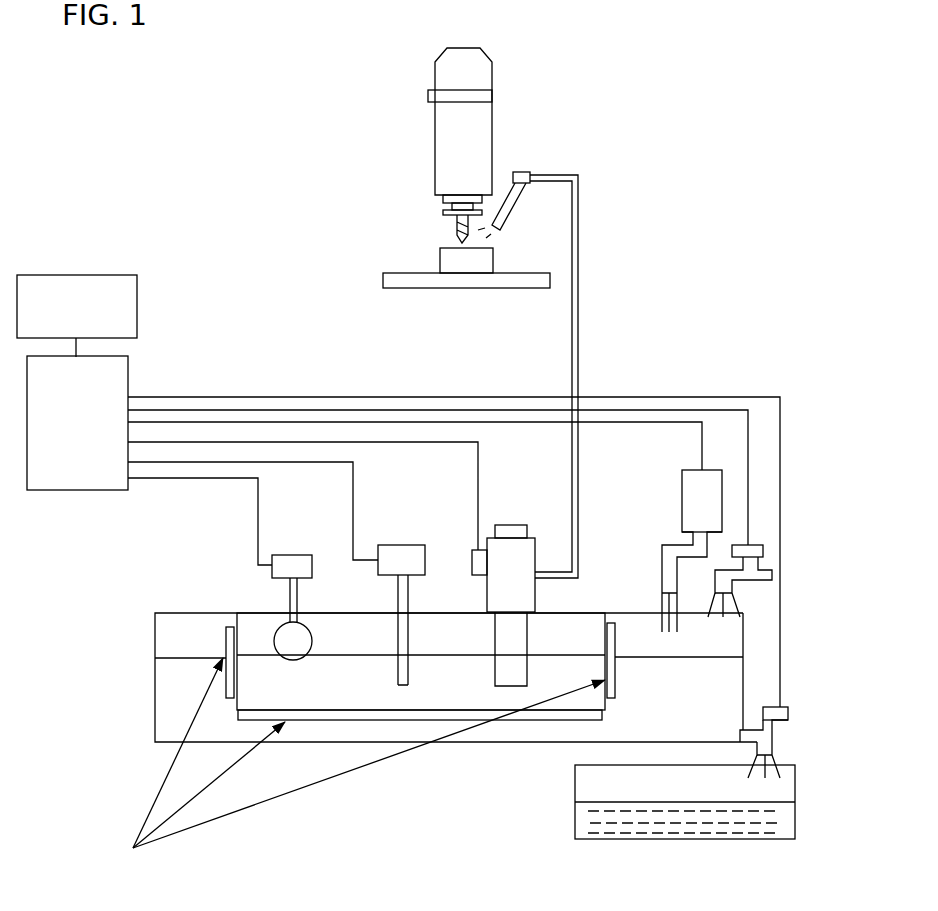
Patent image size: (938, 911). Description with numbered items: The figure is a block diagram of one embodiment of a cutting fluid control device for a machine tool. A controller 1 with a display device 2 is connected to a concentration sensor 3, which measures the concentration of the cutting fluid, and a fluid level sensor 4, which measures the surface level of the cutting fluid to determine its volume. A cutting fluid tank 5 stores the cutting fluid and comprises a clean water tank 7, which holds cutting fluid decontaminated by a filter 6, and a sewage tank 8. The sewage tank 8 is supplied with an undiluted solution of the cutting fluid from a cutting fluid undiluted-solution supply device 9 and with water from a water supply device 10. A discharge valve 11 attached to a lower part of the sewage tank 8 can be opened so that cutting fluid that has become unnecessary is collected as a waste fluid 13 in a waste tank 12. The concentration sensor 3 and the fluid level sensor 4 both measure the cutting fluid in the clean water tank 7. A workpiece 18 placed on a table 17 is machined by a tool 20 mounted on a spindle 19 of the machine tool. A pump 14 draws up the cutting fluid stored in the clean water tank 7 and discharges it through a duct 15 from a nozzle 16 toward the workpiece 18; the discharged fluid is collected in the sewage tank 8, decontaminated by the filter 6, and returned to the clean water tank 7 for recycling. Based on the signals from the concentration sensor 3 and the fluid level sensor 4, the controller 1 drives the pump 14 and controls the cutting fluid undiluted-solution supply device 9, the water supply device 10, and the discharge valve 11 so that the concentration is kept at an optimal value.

The controller 1 is at (130, 378).
The display device 2 is at (70, 275).
The concentration sensor 3 is at (403, 545).
The fluid level sensor 4 is at (290, 555).
The cutting fluid tank 5 is at (157, 700).
The filter 6 is at (360, 770).
The clean water tank 7 is at (265, 657).
The sewage tank 8 is at (183, 658).
The cutting fluid undiluted-solution supply device 9 is at (682, 492).
The water supply device 10 is at (763, 548).
The discharge valve 11 is at (788, 710).
The waste tank 12 is at (575, 782).
The waste fluid 13 is at (592, 823).
The pump 14 is at (513, 525).
The duct 15 is at (580, 248).
The nozzle 16 is at (498, 215).
The table 17 is at (382, 275).
The workpiece 18 is at (440, 265).
The spindle 19 is at (433, 143).
The tool 20 is at (457, 230).